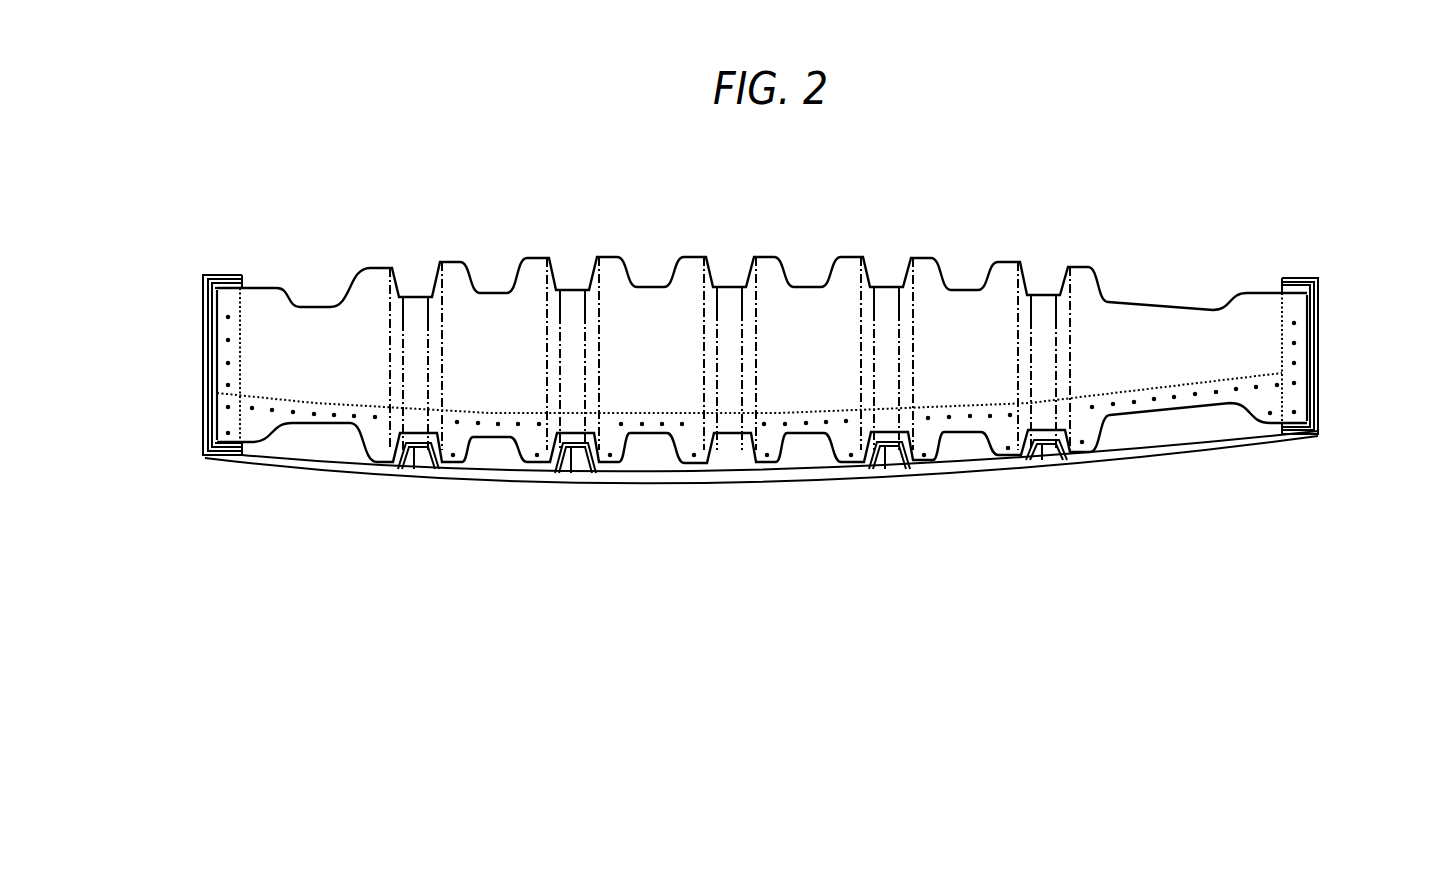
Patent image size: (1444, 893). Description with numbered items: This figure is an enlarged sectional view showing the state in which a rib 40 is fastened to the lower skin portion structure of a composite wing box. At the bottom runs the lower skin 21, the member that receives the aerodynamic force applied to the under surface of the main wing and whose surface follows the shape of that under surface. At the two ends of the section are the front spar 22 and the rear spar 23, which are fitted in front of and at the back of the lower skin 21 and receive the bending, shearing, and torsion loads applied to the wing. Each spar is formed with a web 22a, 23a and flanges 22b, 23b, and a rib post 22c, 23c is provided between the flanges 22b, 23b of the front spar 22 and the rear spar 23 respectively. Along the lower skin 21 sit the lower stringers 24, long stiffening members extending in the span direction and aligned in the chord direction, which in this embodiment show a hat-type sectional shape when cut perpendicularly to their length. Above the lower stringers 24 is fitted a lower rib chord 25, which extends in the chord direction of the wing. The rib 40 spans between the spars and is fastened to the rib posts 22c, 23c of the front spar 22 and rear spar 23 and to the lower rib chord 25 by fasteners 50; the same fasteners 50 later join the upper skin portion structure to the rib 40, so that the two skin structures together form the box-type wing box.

The lower skin 21 is at (803, 472).
The front spar 22 is at (203, 423).
The web 22a is at (203, 377).
The flange 22b is at (232, 275).
The rib post 22c is at (223, 303).
The rear spar 23 is at (1321, 353).
The web 23a is at (1320, 307).
The flange 23b is at (1297, 278).
The rib post 23c is at (1297, 395).
The lower stringer 24 is at (418, 472).
The lower rib chord 25 is at (643, 457).
The rib 40 is at (810, 298).
The fastener 50 is at (1147, 402).